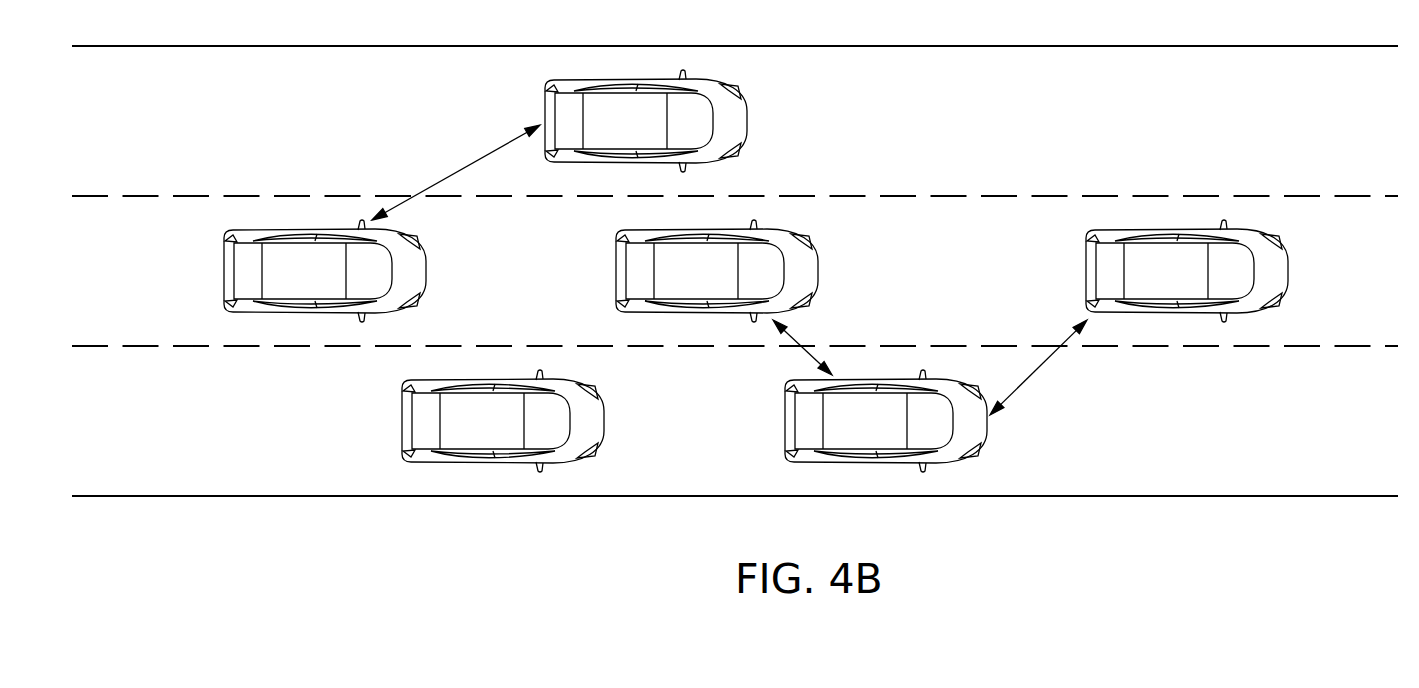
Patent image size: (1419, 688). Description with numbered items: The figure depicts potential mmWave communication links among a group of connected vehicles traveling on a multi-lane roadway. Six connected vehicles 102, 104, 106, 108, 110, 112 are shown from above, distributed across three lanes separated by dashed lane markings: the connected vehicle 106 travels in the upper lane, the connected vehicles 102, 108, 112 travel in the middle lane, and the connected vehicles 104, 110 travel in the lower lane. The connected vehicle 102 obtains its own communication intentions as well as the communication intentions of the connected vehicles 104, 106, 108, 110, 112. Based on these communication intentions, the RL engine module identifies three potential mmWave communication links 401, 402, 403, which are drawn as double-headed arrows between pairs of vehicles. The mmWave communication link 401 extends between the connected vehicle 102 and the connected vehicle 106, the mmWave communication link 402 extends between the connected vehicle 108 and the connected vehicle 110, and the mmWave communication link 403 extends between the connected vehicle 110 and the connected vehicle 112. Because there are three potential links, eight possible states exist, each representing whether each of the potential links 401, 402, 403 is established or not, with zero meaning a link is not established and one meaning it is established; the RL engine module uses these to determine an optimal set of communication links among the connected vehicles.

The connected vehicle 102 is at (280, 284).
The connected vehicle 104 is at (458, 434).
The connected vehicle 106 is at (601, 134).
The connected vehicle 108 is at (672, 284).
The connected vehicle 110 is at (841, 434).
The connected vehicle 112 is at (1142, 284).
The mmWave communication link 401 is at (455, 174).
The mmWave communication link 402 is at (799, 344).
The mmWave communication link 403 is at (1043, 365).